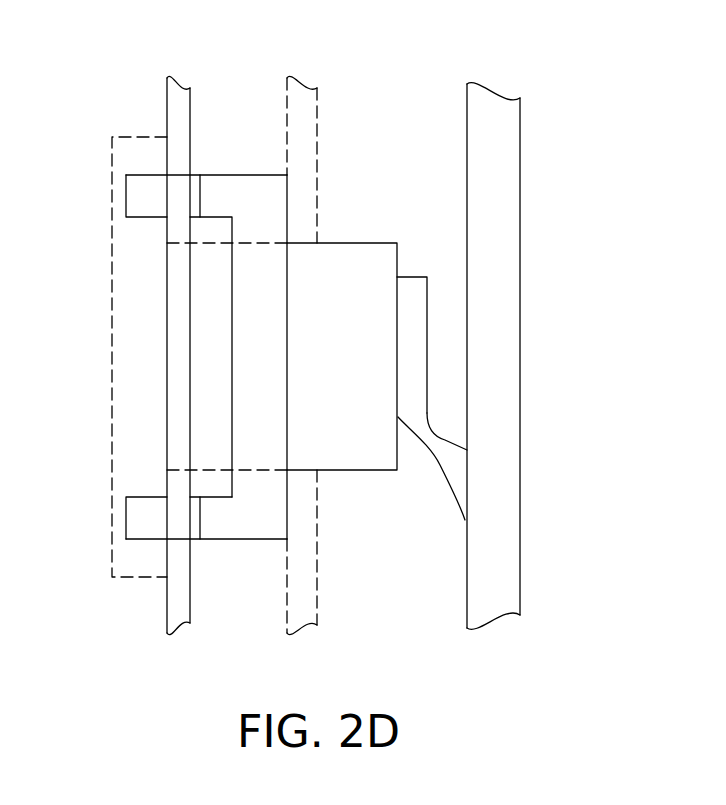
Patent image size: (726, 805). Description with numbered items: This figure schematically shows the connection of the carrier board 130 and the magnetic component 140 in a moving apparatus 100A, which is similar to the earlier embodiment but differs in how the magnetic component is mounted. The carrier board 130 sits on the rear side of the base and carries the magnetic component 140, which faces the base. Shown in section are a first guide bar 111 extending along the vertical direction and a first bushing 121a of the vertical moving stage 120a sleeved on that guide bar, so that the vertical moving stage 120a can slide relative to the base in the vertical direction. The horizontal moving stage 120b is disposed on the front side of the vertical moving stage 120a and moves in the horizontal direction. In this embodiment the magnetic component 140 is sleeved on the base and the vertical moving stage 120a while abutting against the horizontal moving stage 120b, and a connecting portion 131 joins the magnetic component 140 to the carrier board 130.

The moving apparatus 100A is at (355, 352).
The first guide bar 111 is at (182, 105).
The vertical moving stage 120a is at (247, 183).
The horizontal moving stage 120b is at (138, 135).
The first bushing 121a is at (211, 535).
The carrier board 130 is at (510, 163).
The conductive connectors 131 is at (449, 452).
The magnetic component 140 is at (339, 257).